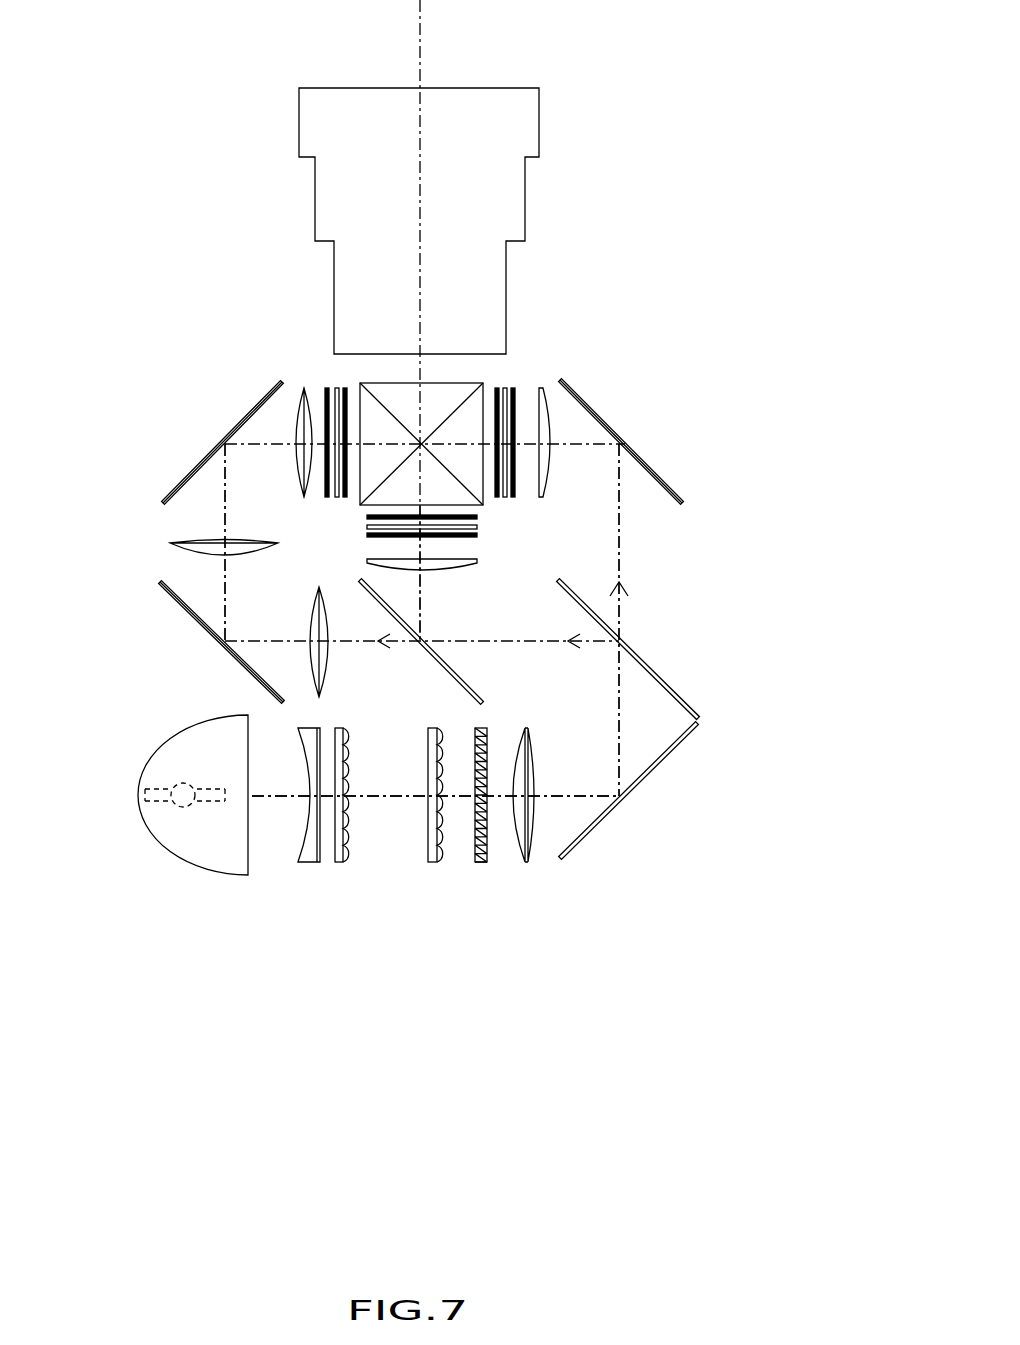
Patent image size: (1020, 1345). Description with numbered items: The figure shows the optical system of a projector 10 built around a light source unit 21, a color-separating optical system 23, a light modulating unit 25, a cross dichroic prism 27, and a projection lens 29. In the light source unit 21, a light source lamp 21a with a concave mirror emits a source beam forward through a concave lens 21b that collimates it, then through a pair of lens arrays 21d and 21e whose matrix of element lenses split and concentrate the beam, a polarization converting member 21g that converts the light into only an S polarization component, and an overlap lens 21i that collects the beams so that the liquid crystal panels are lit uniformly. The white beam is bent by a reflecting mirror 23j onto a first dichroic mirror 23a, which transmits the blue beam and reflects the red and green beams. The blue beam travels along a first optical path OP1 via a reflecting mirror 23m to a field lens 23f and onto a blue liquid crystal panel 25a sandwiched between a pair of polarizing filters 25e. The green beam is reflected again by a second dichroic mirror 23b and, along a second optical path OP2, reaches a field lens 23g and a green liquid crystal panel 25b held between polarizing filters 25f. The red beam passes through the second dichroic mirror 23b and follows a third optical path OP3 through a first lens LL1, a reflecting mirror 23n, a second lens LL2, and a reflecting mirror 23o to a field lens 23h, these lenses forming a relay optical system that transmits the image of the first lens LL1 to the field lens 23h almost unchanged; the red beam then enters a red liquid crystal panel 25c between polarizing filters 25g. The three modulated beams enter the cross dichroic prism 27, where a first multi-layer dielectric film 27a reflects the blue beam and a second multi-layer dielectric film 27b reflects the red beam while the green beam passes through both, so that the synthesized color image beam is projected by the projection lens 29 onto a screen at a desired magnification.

The projector 10 is at (793, 19).
The projection lens 29 is at (487, 178).
The cross dichroic prism 27 is at (392, 376).
The first multi-layer dielectric film 27a is at (378, 397).
The second multi-layer dielectric film 27b is at (467, 397).
The light modulating unit 25 is at (527, 385).
The blue liquid crystal panel 25a is at (510, 474).
The green liquid crystal panel 25b is at (477, 527).
The red liquid crystal panel 25c is at (298, 418).
The polarizing filters 25e is at (513, 497).
The polarizing filters 25f is at (367, 535).
The polarizing filters 25g is at (345, 498).
The color-separating optical system 23 is at (207, 658).
The first dichroic mirror 23a is at (658, 677).
The second dichroic mirror 23b is at (460, 673).
The field lens 23f is at (550, 432).
The field lens 23g is at (480, 555).
The field lens 23h is at (298, 456).
The reflecting mirror 23j is at (600, 825).
The reflecting mirror 23m is at (670, 485).
The reflecting mirror 23n is at (187, 615).
The reflecting mirror 23o is at (180, 478).
The first lens LL1 is at (330, 677).
The second lens LL2 is at (172, 545).
The first optical path OP1 is at (621, 530).
The second optical path OP2 is at (422, 595).
The third optical path OP3 is at (222, 523).
The light source unit 21 is at (355, 943).
The light source lamp 21a is at (210, 862).
The concave lens 21b is at (305, 863).
The lens array 21d is at (340, 863).
The lens array 21e is at (432, 863).
The polarization converting member 21g is at (480, 863).
The overlap lens 21i is at (527, 863).